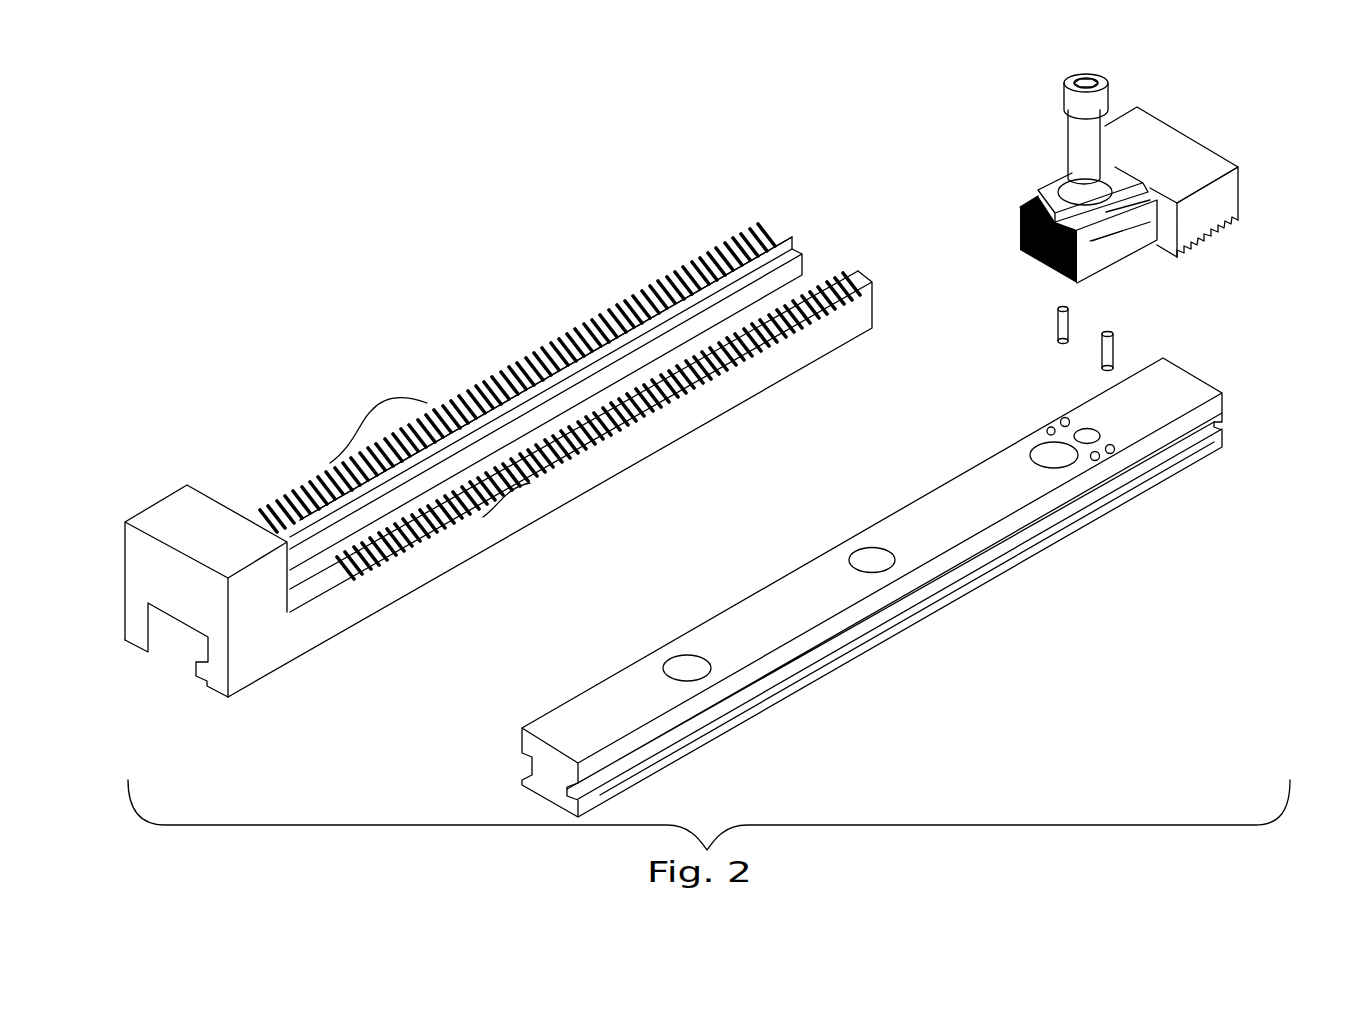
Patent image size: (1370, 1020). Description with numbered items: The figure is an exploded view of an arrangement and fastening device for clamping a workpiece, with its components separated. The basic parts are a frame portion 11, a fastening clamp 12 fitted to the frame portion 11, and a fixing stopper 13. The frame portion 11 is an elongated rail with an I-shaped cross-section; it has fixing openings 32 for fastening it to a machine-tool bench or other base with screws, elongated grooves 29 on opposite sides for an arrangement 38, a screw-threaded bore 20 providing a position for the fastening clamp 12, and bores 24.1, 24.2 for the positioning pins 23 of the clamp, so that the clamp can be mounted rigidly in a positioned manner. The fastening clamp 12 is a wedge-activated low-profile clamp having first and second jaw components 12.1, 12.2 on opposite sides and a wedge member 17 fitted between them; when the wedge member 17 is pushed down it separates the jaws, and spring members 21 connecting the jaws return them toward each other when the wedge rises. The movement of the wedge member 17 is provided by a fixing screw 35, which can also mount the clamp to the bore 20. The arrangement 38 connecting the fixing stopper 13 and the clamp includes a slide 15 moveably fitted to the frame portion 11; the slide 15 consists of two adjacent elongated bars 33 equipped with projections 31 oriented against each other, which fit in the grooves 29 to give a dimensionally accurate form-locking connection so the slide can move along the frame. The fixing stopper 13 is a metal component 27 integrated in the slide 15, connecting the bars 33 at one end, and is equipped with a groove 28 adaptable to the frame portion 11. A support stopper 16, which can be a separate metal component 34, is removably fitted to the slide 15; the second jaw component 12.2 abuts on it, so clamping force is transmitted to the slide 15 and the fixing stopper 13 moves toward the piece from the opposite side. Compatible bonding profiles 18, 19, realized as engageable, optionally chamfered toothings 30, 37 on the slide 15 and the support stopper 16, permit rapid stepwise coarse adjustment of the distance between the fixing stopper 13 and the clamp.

The frame portion 11 is at (793, 605).
The fastening clamp 12 is at (1030, 186).
The first jaw component 12.1 is at (1030, 251).
The second jaw component 12.2 is at (1139, 181).
The fixing stopper 13 is at (160, 485).
The slide 15 is at (456, 385).
The support stopper 16 is at (1198, 127).
The wedge member 17 is at (1058, 176).
The bonding profile 18 is at (580, 416).
The bonding profile 19 is at (1215, 262).
The bore 20 is at (1102, 438).
The spring members 21 is at (1133, 252).
The positioning pins 23 is at (1102, 366).
The bore 24.1 is at (1064, 417).
The bore 24.2 is at (1048, 426).
The metal component 27 is at (273, 602).
The groove 28 is at (155, 612).
The elongated grooves 29 is at (741, 705).
The toothing 30 is at (367, 418).
The projections 31 is at (802, 256).
The fixing openings 32 is at (866, 552).
The elongated bars 33 is at (700, 256).
The metal component 34 is at (1209, 184).
The fixing screw 35 is at (1093, 107).
The toothing 37 is at (1217, 238).
The arrangement 38 is at (546, 354).